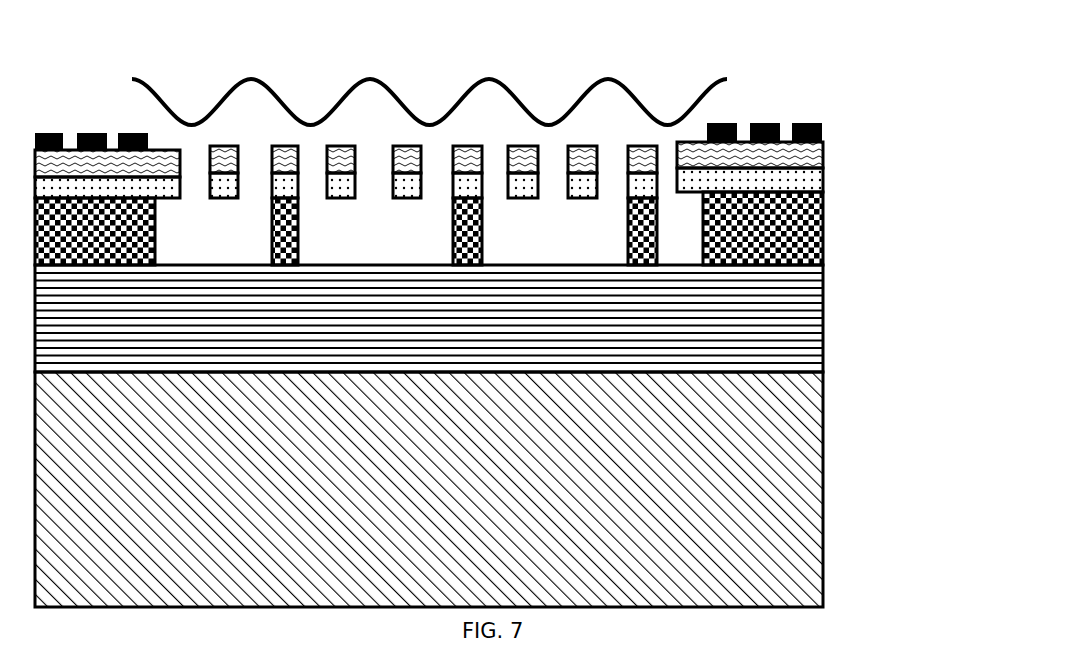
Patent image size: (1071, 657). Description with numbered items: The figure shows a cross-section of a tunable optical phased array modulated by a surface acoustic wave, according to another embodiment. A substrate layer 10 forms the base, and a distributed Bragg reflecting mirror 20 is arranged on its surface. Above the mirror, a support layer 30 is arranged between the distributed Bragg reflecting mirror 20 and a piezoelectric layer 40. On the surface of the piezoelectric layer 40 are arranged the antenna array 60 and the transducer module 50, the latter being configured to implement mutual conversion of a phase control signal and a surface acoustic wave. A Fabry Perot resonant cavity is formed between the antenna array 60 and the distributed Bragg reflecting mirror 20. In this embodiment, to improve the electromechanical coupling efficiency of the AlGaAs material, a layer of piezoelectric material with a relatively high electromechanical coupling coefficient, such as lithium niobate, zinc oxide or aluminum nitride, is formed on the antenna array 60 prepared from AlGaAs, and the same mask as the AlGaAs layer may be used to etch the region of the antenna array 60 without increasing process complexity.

The substrate layer 10 is at (825, 480).
The distributed Bragg reflecting mirror 20 is at (802, 335).
The support layer 30 is at (822, 240).
The piezoelectric layer 40 is at (822, 173).
The transducer module 50 is at (768, 125).
The antenna array 60 is at (422, 157).